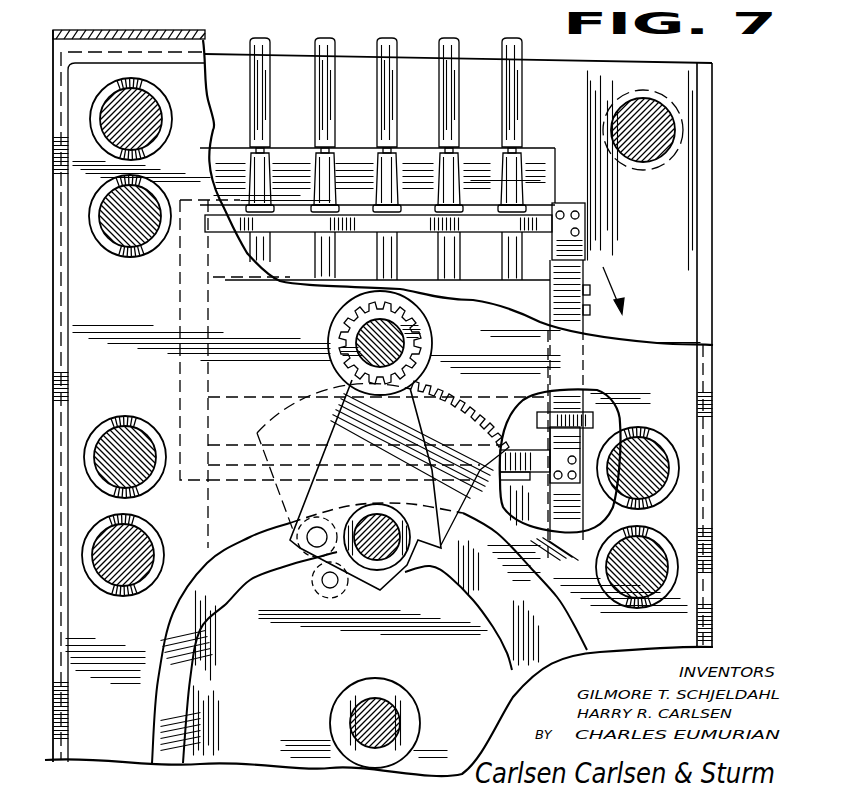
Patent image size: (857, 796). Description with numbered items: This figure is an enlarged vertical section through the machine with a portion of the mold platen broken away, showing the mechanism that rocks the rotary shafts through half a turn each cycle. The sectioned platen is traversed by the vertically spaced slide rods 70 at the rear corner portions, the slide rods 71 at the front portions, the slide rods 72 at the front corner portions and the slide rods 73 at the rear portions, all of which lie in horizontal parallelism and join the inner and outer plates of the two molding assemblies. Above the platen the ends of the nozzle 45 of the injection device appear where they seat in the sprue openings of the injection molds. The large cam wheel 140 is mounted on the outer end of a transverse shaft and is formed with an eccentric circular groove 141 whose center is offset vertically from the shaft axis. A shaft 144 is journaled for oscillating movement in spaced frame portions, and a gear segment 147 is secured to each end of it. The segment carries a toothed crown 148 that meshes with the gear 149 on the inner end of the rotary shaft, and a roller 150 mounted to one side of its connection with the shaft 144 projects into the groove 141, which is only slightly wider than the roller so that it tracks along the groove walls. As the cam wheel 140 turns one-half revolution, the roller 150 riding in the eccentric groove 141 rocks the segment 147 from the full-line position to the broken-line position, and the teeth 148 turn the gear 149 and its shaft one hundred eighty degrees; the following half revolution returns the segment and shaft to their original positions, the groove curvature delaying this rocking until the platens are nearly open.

The nozzle 45 is at (438, 53).
The slide rods 70 is at (105, 118).
The slide rods 71 is at (663, 473).
The slide rods 72 is at (665, 132).
The slide rods 73 is at (115, 236).
The cam wheel 140 is at (165, 693).
The eccentric circular groove 141 is at (537, 643).
The shaft 144 is at (386, 560).
The gear segment 147 is at (430, 542).
The toothed crown 148 is at (427, 390).
The gear 149 is at (410, 337).
The roller 150 is at (262, 532).